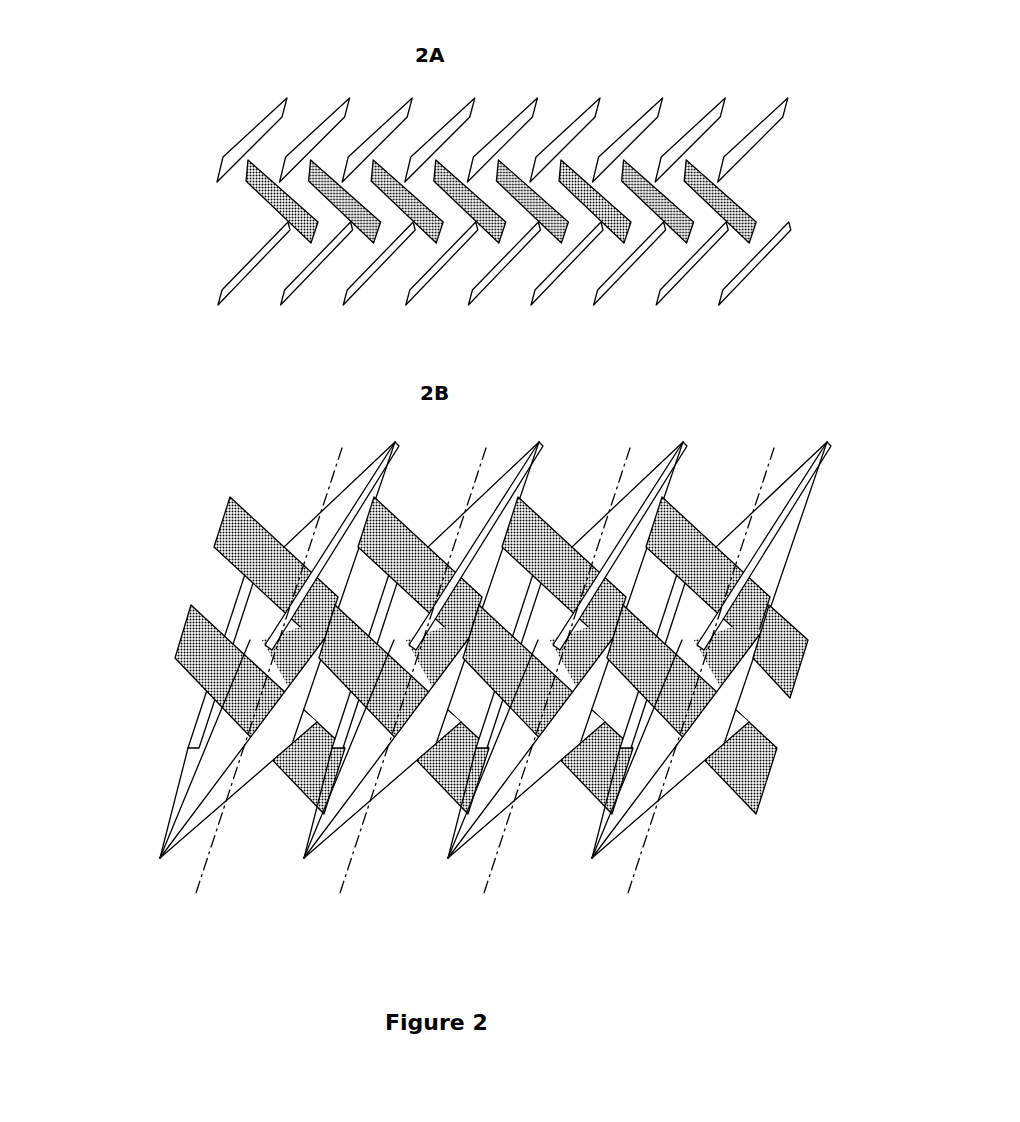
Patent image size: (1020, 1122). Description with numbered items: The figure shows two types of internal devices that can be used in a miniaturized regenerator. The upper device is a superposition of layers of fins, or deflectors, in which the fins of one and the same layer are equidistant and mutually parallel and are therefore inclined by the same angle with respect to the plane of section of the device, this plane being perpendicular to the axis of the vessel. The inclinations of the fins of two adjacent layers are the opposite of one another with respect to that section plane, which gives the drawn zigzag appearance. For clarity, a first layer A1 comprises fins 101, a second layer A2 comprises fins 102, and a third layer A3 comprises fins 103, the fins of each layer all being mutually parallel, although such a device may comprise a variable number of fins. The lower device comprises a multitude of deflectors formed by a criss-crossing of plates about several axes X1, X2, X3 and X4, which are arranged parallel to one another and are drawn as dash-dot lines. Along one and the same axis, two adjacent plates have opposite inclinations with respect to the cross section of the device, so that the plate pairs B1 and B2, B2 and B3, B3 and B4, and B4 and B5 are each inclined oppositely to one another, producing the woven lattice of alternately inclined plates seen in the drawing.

The fins 101 is at (428, 109).
The fins 102 is at (273, 295).
The fins 103 is at (720, 292).
The layer A1 is at (182, 125).
The layer A2 is at (182, 207).
The layer A3 is at (182, 277).
The plate B1 is at (190, 803).
The plate B2 is at (207, 642).
The plate B3 is at (222, 717).
The plate B4 is at (235, 537).
The plate B5 is at (307, 528).
The axis X1 is at (254, 693).
The axis X2 is at (338, 898).
The axis X3 is at (483, 898).
The axis X4 is at (628, 898).